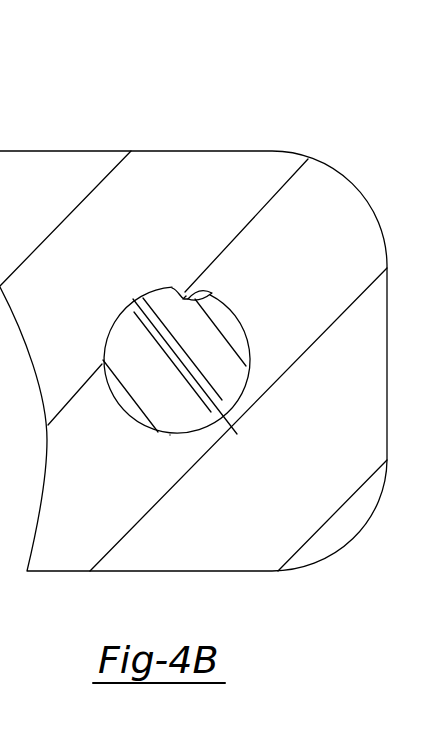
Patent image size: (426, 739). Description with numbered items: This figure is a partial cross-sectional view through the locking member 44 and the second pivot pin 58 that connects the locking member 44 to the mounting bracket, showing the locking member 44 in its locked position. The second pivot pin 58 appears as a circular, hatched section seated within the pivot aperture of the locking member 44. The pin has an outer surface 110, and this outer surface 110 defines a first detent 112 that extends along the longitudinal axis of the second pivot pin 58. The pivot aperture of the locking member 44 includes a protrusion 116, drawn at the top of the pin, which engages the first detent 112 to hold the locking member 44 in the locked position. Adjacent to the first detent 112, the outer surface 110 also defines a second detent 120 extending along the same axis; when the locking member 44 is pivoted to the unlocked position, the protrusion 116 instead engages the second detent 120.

The locking member 44 is at (201, 162).
The second pivot pin 58 is at (228, 350).
The outer surface 110 is at (170, 435).
The first detent 112 is at (182, 295).
The protrusion 116 is at (185, 292).
The second detent 120 is at (206, 294).